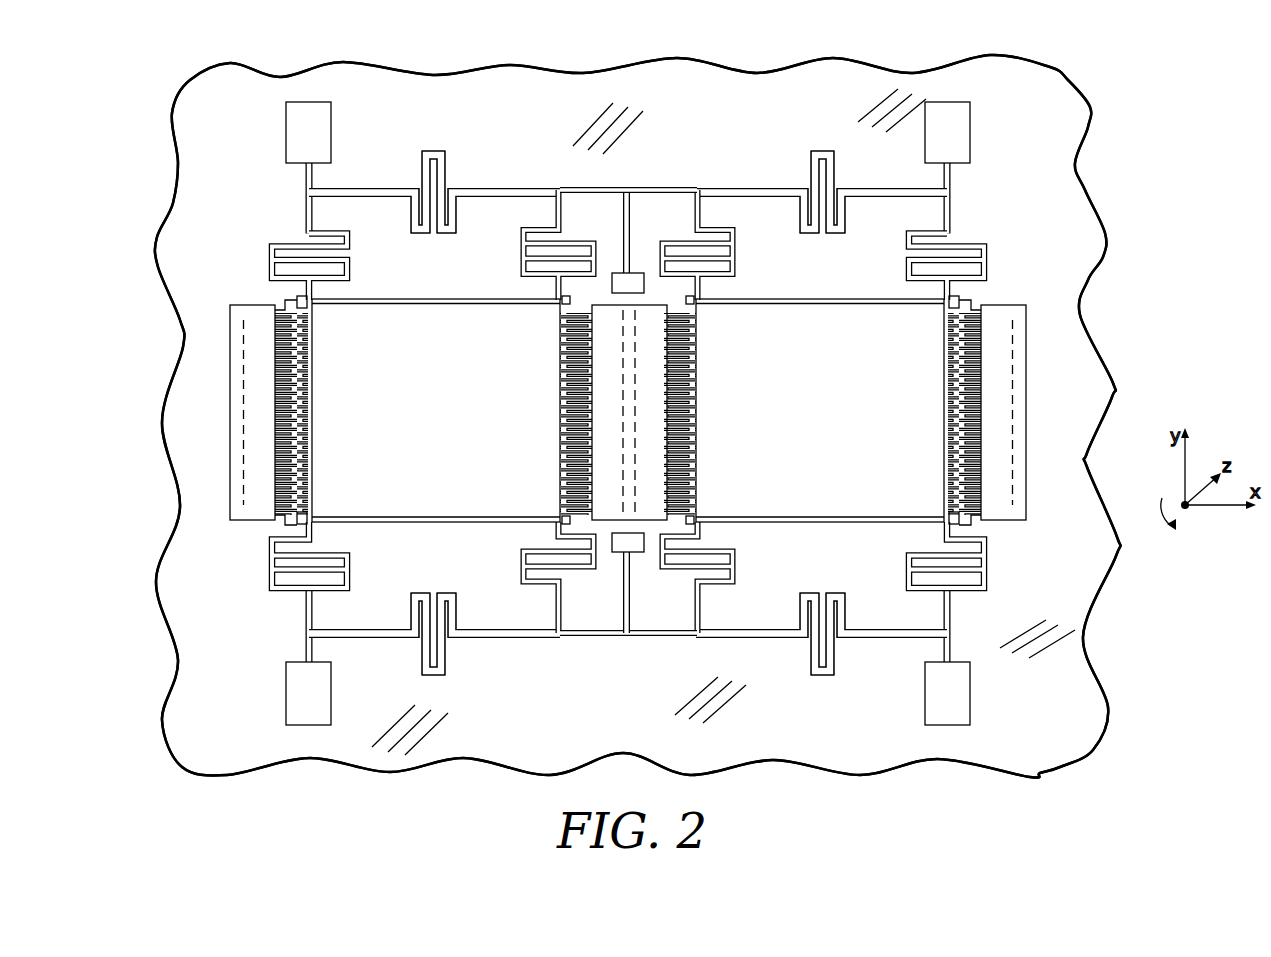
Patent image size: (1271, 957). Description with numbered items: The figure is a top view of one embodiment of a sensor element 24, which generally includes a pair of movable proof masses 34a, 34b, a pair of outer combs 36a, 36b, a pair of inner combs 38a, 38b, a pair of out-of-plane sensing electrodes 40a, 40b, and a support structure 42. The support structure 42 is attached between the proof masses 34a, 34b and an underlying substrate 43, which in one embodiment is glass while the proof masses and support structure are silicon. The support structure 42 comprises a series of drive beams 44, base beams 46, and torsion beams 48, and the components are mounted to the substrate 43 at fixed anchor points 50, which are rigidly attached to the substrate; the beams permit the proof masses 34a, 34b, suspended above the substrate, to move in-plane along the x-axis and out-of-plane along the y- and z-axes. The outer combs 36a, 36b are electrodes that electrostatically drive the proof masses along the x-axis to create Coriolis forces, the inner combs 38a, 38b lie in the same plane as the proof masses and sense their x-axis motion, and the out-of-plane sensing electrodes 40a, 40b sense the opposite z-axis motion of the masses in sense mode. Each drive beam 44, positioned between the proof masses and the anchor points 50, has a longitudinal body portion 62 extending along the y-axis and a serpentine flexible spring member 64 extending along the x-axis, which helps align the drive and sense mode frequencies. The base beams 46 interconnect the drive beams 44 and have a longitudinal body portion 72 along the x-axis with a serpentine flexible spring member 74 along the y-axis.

The sensor element 24 is at (1122, 100).
The underlying substrate 43 is at (1082, 198).
The movable proof mass 34a is at (445, 426).
The movable proof mass 34b is at (845, 426).
The outer comb 36a is at (262, 330).
The outer comb 36b is at (994, 330).
The inner comb 38a is at (600, 395).
The inner comb 38b is at (658, 395).
The out-of-plane sensing electrode 40a is at (443, 300).
The out-of-plane sensing electrode 40b is at (833, 300).
The support structure 42 is at (603, 185).
The drive beam 44 is at (300, 237).
The base beam 46 is at (492, 150).
The torsion beam 48 is at (623, 228).
The fixed anchor point 50 is at (286, 130).
The longitudinal body portion 62 is at (318, 216).
The flexible spring member 64 is at (268, 250).
The longitudinal body portion 72 is at (360, 188).
The flexible spring member 74 is at (434, 150).